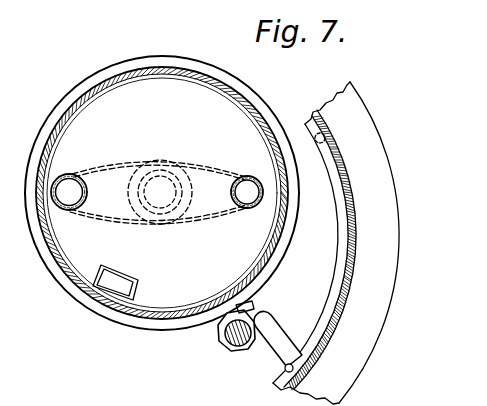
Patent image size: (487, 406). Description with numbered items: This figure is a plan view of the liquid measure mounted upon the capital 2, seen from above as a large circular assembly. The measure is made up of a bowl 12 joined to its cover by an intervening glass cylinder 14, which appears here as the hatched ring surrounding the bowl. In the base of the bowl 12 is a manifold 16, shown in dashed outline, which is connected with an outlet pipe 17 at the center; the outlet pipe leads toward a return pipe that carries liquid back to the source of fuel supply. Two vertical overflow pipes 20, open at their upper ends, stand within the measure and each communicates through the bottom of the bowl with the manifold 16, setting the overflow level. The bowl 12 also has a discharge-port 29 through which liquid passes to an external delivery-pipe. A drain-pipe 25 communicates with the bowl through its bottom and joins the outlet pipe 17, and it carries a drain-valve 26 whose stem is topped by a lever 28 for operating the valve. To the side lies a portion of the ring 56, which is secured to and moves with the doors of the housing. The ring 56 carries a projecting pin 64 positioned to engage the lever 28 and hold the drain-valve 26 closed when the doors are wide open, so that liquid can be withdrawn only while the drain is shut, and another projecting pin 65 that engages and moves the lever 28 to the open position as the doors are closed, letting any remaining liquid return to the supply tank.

The capital 2 is at (397, 228).
The bowl 12 is at (250, 264).
The glass cylinder 14 is at (288, 203).
The manifold 16 is at (205, 163).
The outlet pipe 17 is at (160, 192).
The overflow pipes 20 is at (78, 177).
The drain-pipe 25 is at (220, 331).
The drain-valve 26 is at (229, 347).
The lever 28 is at (279, 333).
The discharge-port 29 is at (137, 285).
The ring 56 is at (339, 239).
The projecting pin 64 is at (285, 368).
The projecting pin 65 is at (317, 143).